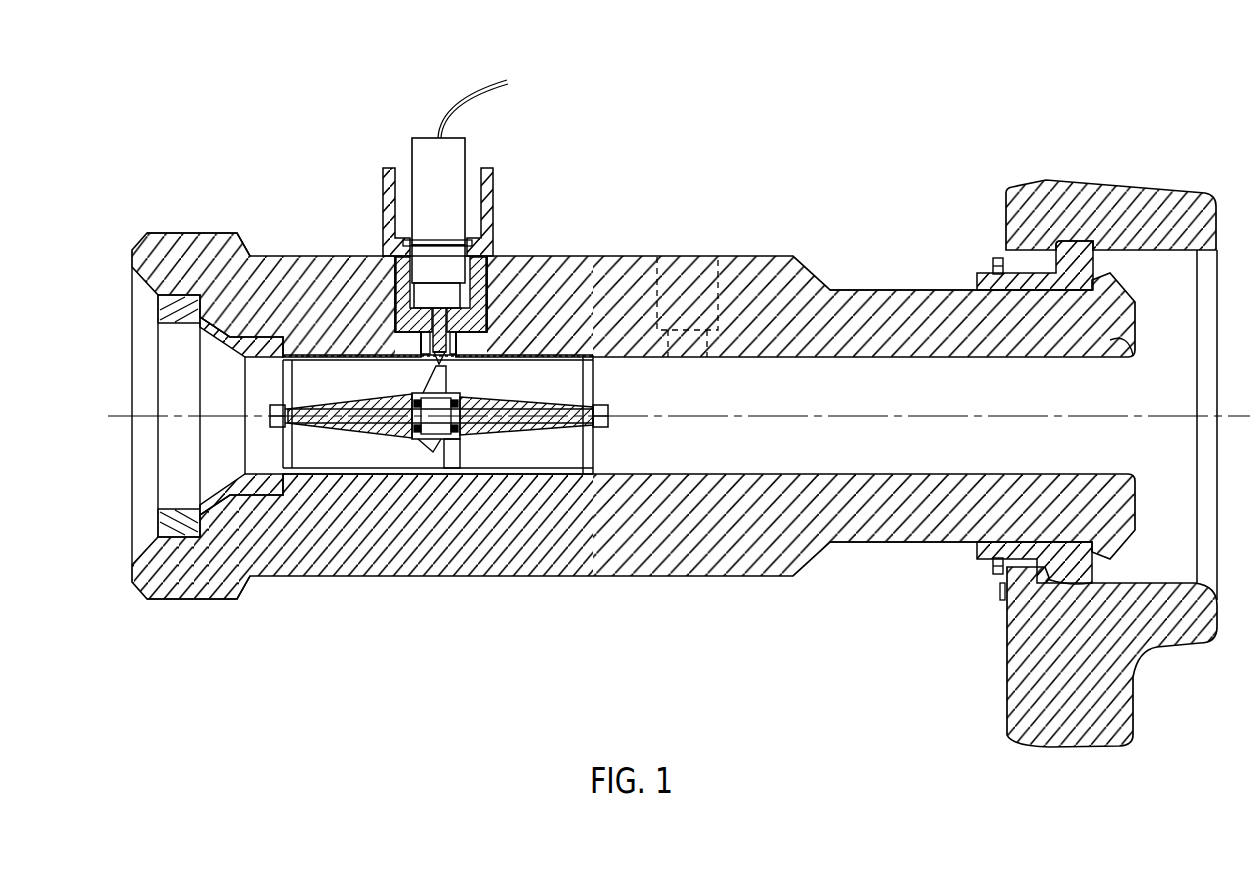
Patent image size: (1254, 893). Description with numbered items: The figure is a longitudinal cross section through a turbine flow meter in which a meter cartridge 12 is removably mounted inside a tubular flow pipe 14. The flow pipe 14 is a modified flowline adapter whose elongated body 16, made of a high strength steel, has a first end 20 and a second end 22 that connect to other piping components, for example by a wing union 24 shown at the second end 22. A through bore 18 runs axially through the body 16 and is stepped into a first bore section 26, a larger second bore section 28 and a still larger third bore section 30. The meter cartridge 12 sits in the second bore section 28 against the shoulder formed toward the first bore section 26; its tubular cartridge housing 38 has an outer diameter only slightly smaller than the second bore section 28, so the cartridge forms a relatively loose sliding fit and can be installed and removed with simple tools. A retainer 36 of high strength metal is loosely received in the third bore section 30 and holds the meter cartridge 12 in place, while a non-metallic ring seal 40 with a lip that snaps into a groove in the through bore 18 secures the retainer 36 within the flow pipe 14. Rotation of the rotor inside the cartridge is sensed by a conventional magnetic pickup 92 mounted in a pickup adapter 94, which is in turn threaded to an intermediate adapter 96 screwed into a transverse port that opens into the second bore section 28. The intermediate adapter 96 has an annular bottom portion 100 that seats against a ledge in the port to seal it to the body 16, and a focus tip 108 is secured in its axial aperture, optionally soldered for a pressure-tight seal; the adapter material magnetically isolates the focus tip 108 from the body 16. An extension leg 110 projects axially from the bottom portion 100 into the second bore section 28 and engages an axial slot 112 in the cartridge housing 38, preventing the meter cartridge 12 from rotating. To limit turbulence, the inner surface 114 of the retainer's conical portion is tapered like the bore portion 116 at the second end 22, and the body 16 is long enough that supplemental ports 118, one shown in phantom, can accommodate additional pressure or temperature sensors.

The annular bottom portion 100 is at (193, 130).
The meter cartridge 12 is at (381, 484).
The tubular flow pipe 14 is at (469, 580).
The elongated body 16 is at (574, 578).
The through bore 18 is at (869, 401).
The first end 20 is at (199, 598).
The second end 22 is at (1003, 590).
The wing union 24 is at (1003, 673).
The first bore section 26 is at (902, 472).
The second bore section 28 is at (568, 472).
The third bore section 30 is at (267, 473).
The retainer 36 is at (258, 326).
The tubular cartridge housing 38 is at (330, 477).
The ring seal 40 is at (171, 545).
The magnetic pickup 92 is at (467, 149).
The pickup adapter 94 is at (495, 200).
The intermediate adapter 96 is at (523, 262).
The focus tip 108 is at (410, 323).
The extension leg 110 is at (430, 360).
The axial slot 112 is at (493, 362).
The inner surface 114 is at (243, 343).
The bore portion 116 is at (1137, 357).
The supplemental ports 118 is at (740, 258).